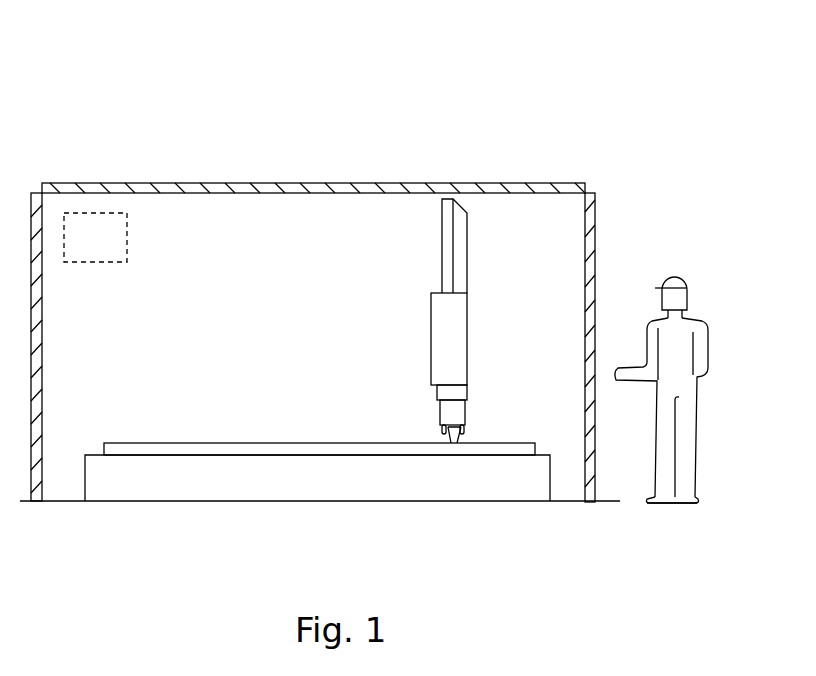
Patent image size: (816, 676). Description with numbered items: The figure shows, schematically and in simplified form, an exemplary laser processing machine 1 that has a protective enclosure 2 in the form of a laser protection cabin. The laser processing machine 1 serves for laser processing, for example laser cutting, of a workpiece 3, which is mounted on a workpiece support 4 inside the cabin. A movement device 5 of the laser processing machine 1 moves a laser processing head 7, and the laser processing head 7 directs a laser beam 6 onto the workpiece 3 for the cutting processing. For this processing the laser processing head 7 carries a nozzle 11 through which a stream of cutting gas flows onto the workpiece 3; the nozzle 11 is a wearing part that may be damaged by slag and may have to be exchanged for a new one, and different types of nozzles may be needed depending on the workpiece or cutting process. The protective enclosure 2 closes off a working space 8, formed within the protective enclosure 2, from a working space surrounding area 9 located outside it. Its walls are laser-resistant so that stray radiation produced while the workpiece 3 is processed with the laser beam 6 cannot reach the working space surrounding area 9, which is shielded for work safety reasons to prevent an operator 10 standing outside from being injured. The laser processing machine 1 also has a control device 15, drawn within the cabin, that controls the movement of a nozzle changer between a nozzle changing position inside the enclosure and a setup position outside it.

The laser processing machine 1 is at (503, 70).
The protective enclosure 2 is at (280, 191).
The workpiece 3 is at (137, 447).
The workpiece support 4 is at (211, 462).
The movement device 5 is at (458, 239).
The laser beam 6 is at (446, 436).
The laser processing head 7 is at (441, 412).
The working space 8 is at (292, 280).
The working space surrounding area 9 is at (668, 224).
The operator 10 is at (692, 323).
The nozzle 11 is at (465, 431).
The control device 15 is at (97, 228).